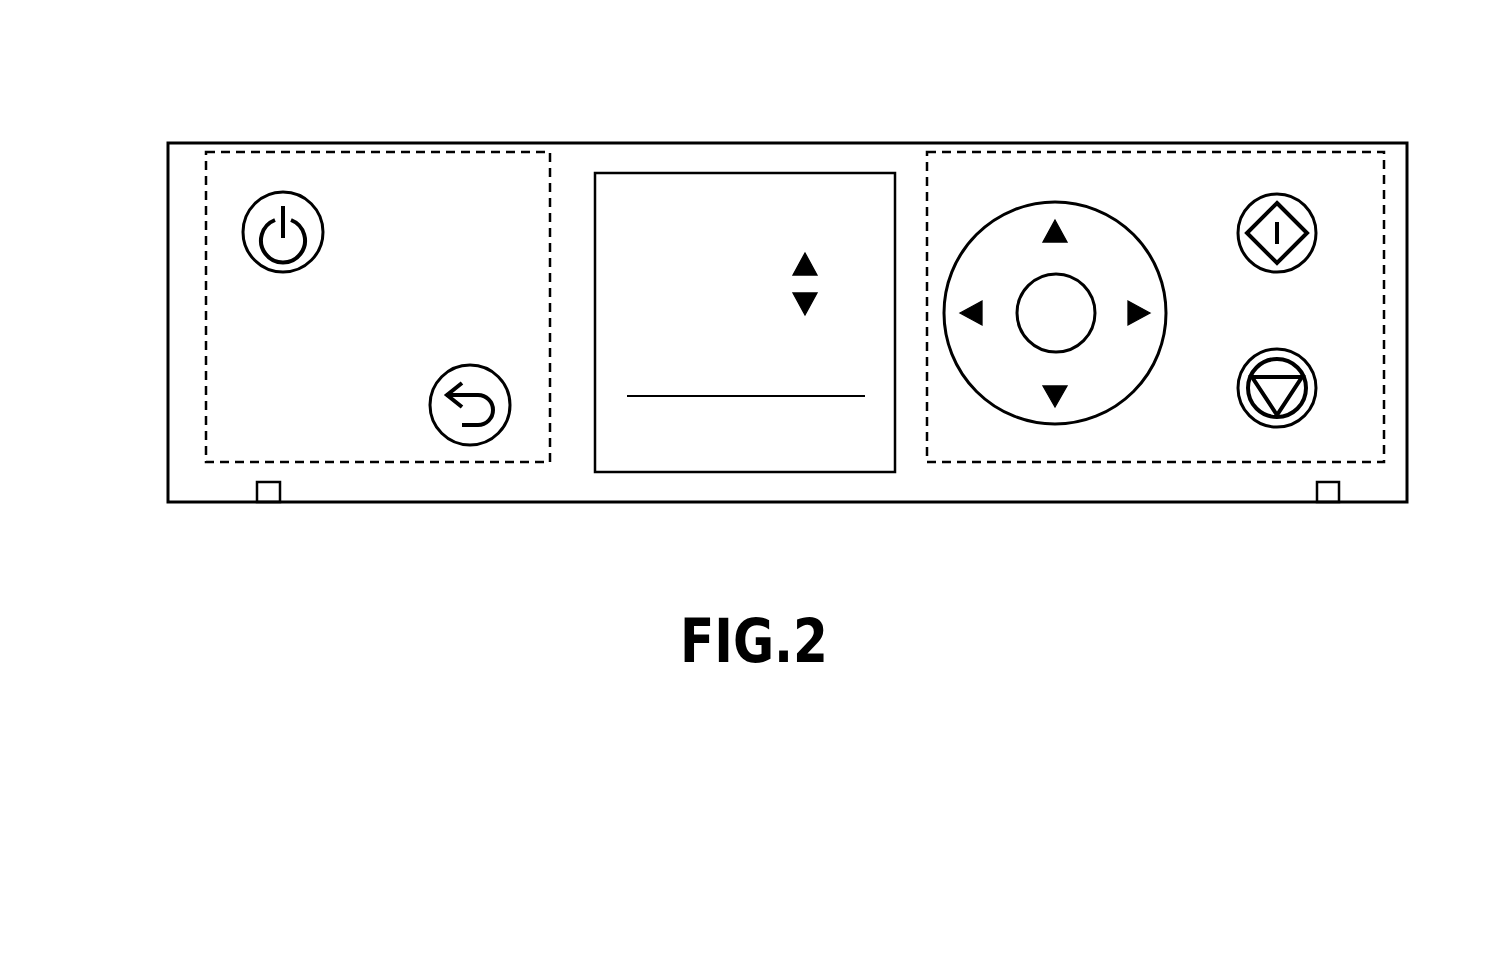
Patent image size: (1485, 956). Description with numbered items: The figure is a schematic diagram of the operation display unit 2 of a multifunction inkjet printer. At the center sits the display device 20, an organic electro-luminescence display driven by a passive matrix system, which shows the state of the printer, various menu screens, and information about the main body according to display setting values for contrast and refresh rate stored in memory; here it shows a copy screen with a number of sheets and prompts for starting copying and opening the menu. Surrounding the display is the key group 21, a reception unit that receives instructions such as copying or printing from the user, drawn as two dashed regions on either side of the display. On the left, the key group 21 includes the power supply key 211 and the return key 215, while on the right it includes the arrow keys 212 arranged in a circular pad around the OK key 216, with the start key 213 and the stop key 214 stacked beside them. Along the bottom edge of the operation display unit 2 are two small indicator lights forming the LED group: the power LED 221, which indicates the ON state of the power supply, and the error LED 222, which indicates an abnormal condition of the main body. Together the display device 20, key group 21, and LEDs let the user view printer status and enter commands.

The operation display unit 2 is at (1356, 143).
The display device 20 is at (750, 173).
The key group 21 is at (508, 463).
The power supply key 211 is at (244, 232).
The arrow keys 212 is at (1054, 203).
The start key 213 is at (1317, 233).
The stop key 214 is at (1317, 390).
The return key 215 is at (430, 400).
The OK key 216 is at (1077, 343).
The power LED 221 is at (268, 505).
The error LED 222 is at (1328, 505).